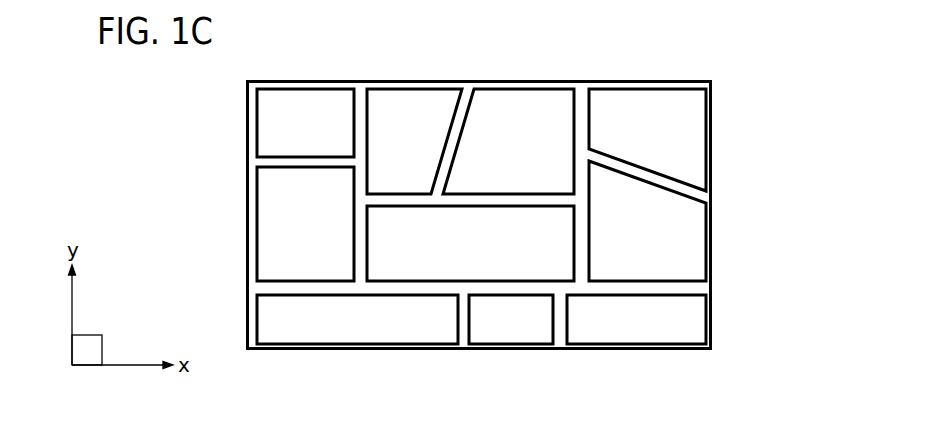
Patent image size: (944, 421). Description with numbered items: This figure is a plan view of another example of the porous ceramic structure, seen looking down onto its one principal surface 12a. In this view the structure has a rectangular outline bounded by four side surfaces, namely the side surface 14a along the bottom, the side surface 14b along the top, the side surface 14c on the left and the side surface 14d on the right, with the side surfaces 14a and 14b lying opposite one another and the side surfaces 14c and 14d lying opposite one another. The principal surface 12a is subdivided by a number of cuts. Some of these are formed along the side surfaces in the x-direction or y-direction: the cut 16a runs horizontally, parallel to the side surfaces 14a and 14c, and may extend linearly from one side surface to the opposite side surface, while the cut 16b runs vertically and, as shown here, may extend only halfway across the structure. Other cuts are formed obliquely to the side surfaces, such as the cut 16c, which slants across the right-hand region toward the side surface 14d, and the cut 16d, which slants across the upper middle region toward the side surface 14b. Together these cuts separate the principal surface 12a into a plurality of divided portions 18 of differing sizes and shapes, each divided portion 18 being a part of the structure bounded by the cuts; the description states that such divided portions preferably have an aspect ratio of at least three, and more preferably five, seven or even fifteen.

The one principal surface 12a is at (497, 252).
The side surface 14a is at (358, 352).
The side surface 14b is at (458, 78).
The side surface 14c is at (245, 190).
The side surface 14d is at (714, 147).
The cut 16a is at (630, 288).
The cut 16b is at (578, 131).
The cut 16c is at (643, 175).
The cut 16d is at (457, 136).
The divided portion 18 is at (644, 100).